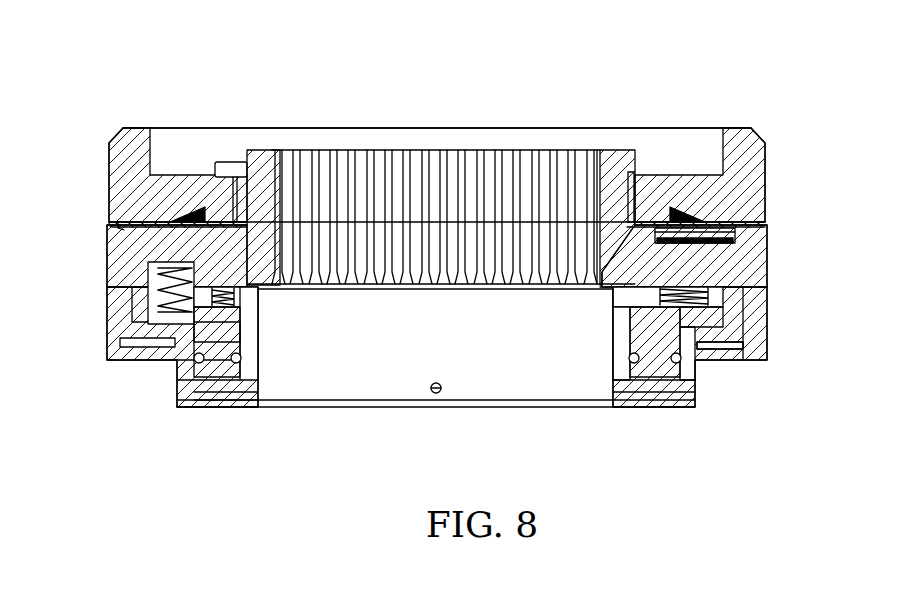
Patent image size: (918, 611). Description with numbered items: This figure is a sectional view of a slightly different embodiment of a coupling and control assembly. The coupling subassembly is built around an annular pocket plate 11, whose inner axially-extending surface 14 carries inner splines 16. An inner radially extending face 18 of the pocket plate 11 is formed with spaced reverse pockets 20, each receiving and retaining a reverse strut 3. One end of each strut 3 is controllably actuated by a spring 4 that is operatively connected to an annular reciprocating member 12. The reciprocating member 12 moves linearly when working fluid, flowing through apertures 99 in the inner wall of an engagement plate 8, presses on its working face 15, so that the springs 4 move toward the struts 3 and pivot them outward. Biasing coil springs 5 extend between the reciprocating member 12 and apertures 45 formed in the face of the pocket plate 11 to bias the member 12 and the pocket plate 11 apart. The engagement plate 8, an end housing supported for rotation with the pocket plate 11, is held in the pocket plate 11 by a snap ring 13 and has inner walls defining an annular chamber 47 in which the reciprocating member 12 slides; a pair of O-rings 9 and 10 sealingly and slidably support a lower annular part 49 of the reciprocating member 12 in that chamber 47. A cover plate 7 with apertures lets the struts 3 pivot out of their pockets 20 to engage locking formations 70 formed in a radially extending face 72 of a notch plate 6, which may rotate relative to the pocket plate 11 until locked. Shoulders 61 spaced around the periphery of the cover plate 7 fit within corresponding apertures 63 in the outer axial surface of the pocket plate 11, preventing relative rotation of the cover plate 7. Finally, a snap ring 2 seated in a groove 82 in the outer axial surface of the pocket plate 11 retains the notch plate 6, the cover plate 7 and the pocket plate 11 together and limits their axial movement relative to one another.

The snap ring 2 is at (228, 162).
The reverse strut 3 is at (705, 232).
The spring 4 is at (236, 296).
The biasing coil spring 5 is at (150, 300).
The notch plate 6 is at (746, 122).
The cover plate 7 is at (748, 231).
The engagement plate 8 is at (670, 412).
The O-ring 9 is at (632, 366).
The O-ring 10 is at (678, 362).
The pocket plate 11 is at (772, 278).
The reciprocating member 12 is at (240, 322).
The snap ring 13 is at (742, 346).
The inner axially-extending surface 14 is at (597, 197).
The working face 15 is at (222, 407).
The inner splines 16 is at (468, 157).
The inner radially extending face 18 is at (122, 224).
The reverse pocket 20 is at (688, 240).
The aperture 45 is at (160, 267).
The annular chamber 47 is at (242, 352).
The lower annular part 49 is at (200, 333).
The shoulder 61 is at (632, 205).
The aperture 63 is at (594, 287).
The locking formation 70 is at (186, 208).
The radially extending face 72 is at (124, 230).
The groove 82 is at (238, 160).
The aperture 99 is at (238, 362).